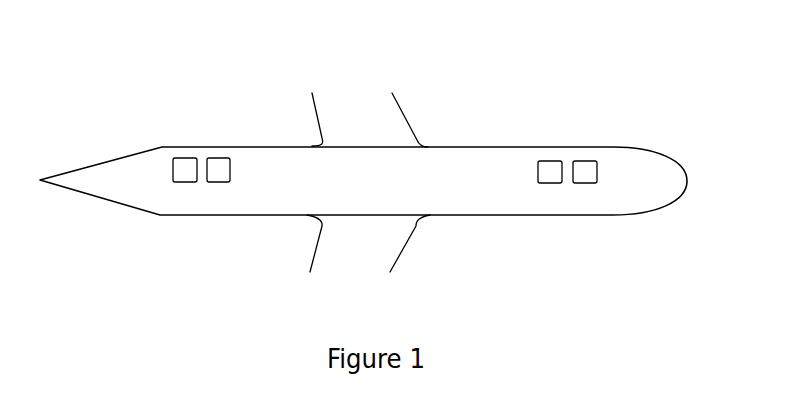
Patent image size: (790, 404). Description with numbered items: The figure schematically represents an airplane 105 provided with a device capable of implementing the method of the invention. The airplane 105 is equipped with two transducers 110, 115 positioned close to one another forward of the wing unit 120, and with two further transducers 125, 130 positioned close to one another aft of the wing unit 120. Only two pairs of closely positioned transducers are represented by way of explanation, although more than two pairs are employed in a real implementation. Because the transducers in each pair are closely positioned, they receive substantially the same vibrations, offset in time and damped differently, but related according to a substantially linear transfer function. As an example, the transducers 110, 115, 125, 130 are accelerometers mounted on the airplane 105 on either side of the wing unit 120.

The airplane 105 is at (517, 205).
The transducer 110 is at (553, 168).
The transducer 115 is at (585, 172).
The wing unit 120 is at (368, 102).
The transducer 125 is at (218, 160).
The transducer 130 is at (184, 176).